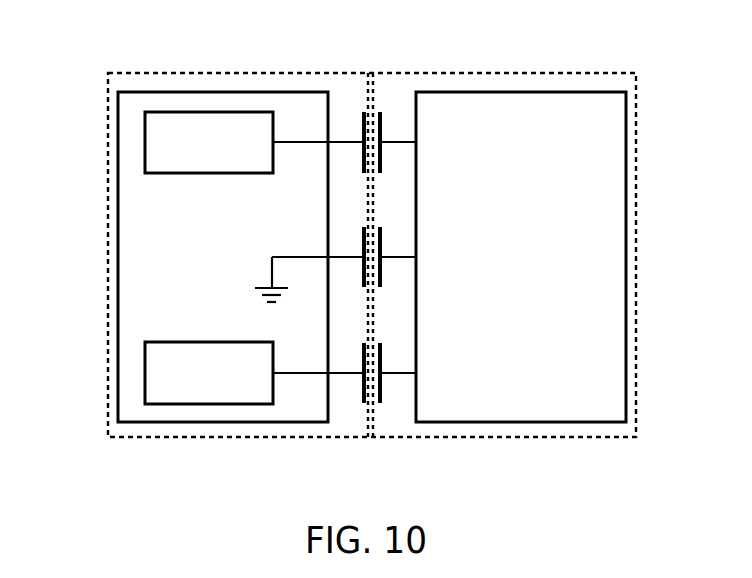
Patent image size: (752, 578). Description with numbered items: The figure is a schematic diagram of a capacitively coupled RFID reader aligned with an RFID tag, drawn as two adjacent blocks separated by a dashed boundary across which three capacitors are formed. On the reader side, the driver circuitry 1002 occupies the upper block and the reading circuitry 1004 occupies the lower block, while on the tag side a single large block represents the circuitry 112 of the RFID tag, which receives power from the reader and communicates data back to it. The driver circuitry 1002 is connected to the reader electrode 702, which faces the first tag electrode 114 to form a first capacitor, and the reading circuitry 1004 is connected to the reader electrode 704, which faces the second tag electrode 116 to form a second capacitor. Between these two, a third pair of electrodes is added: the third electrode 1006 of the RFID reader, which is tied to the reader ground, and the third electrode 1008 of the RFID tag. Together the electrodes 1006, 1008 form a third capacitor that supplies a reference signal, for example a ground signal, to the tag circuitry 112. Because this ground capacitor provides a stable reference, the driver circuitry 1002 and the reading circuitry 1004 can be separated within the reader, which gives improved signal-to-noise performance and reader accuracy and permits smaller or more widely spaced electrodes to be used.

The circuitry of the RFID tag 112 is at (626, 230).
The first electrode of the RFID tag 114 is at (381, 112).
The second electrode of the RFID tag 116 is at (381, 403).
The electrode of the RFID reader 702 is at (364, 112).
The electrode of the RFID reader 704 is at (364, 403).
The driver circuitry 1002 is at (160, 142).
The reading circuitry 1004 is at (160, 373).
The third electrode of the RFID reader 1006 is at (362, 243).
The third electrode of the RFID tag 1008 is at (382, 243).